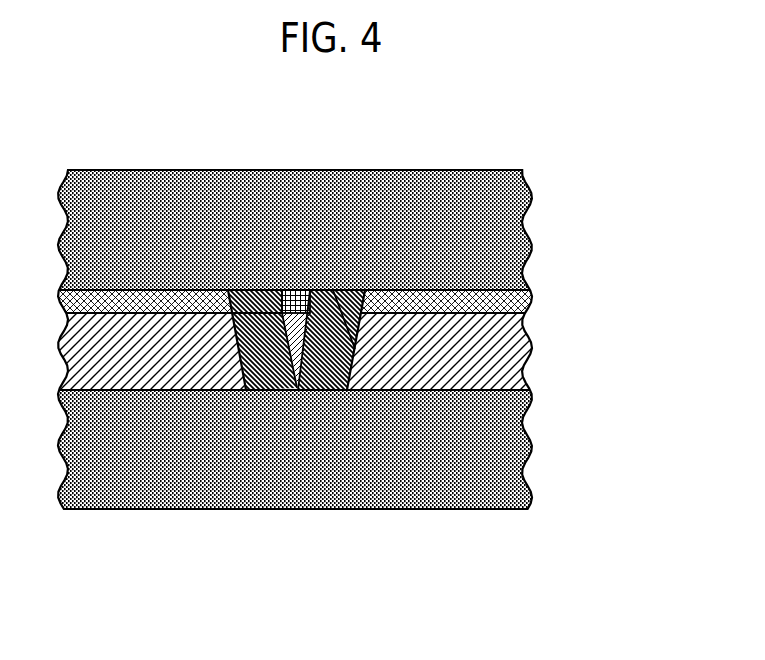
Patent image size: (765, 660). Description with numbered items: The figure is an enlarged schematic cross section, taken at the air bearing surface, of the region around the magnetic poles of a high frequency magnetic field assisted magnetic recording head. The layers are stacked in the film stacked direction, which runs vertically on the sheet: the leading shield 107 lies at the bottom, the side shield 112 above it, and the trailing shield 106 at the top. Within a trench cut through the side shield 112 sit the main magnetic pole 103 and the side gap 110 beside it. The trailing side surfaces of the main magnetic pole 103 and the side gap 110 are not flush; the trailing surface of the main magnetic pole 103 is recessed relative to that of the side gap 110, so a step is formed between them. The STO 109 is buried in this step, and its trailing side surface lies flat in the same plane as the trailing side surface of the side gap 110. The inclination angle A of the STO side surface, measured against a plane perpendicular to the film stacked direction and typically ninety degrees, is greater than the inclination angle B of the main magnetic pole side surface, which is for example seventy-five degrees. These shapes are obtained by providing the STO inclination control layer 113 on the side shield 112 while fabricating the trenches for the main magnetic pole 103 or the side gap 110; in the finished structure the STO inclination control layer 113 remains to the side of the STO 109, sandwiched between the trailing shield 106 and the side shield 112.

The trailing shield 106 is at (511, 232).
The STO inclination control layer 113 is at (523, 300).
The side shield 112 is at (511, 350).
The leading shield 107 is at (510, 442).
The STO 109 is at (295, 290).
The side gap 110 is at (333, 290).
The main magnetic pole 103 is at (296, 328).
The inclination angle of STO side surface A is at (264, 303).
The inclination angle of main magnetic pole side surface B is at (286, 362).